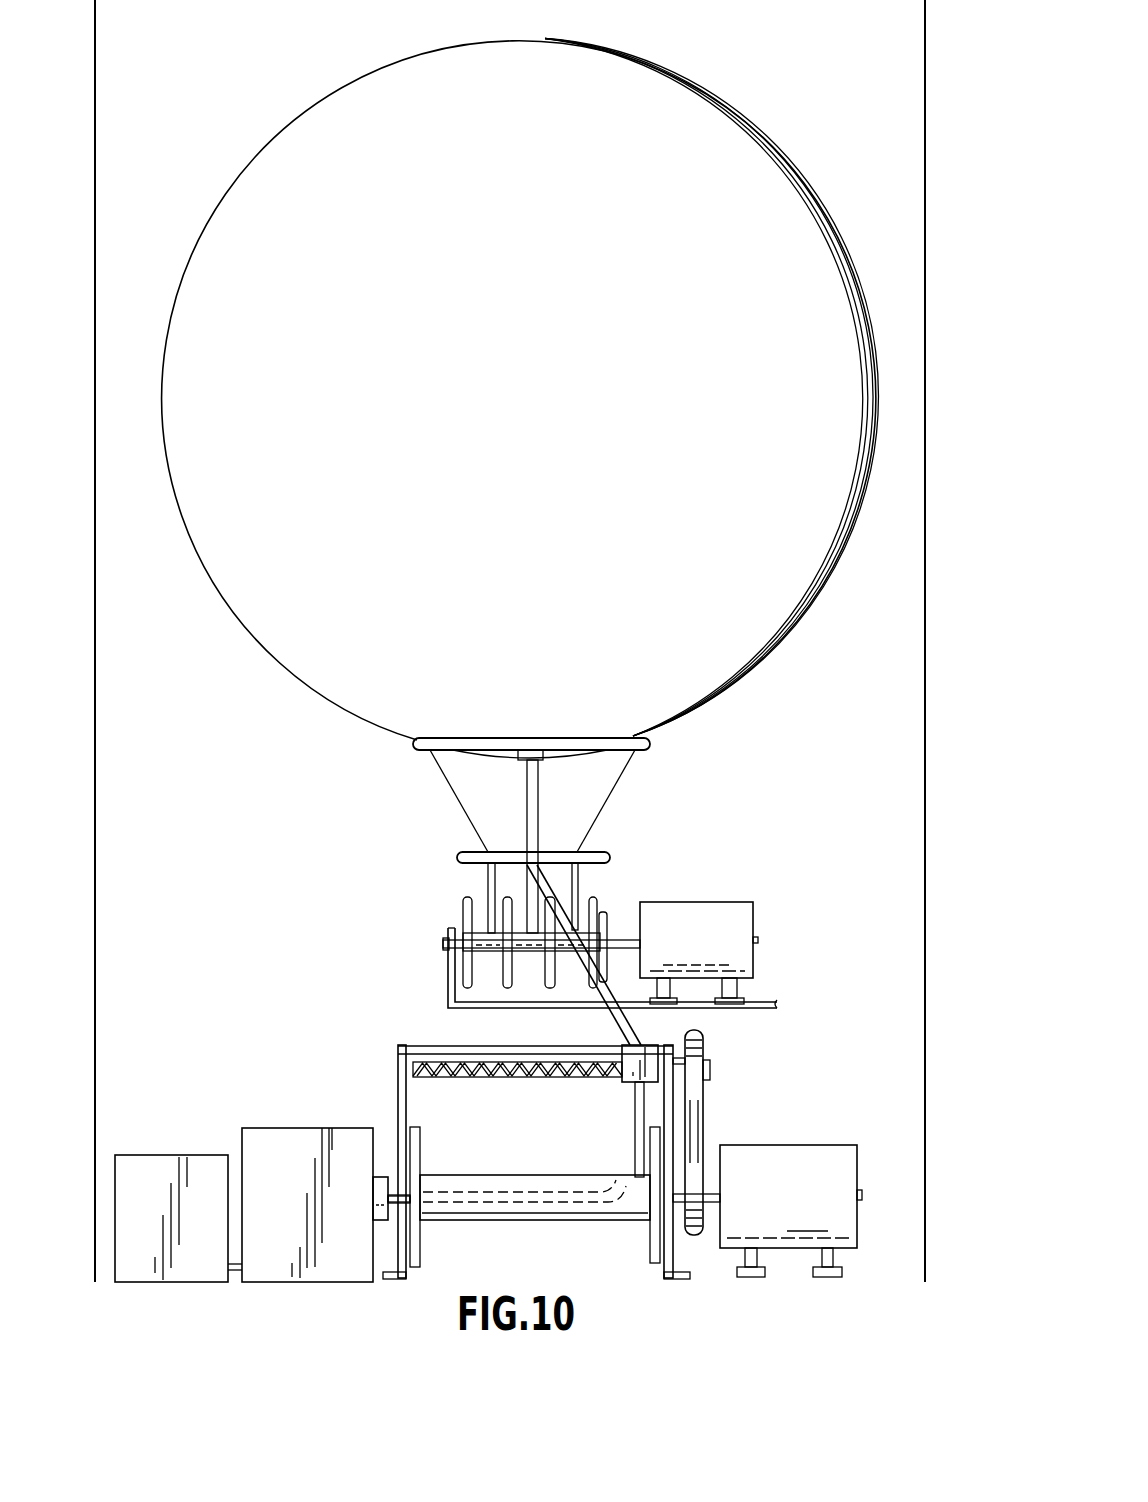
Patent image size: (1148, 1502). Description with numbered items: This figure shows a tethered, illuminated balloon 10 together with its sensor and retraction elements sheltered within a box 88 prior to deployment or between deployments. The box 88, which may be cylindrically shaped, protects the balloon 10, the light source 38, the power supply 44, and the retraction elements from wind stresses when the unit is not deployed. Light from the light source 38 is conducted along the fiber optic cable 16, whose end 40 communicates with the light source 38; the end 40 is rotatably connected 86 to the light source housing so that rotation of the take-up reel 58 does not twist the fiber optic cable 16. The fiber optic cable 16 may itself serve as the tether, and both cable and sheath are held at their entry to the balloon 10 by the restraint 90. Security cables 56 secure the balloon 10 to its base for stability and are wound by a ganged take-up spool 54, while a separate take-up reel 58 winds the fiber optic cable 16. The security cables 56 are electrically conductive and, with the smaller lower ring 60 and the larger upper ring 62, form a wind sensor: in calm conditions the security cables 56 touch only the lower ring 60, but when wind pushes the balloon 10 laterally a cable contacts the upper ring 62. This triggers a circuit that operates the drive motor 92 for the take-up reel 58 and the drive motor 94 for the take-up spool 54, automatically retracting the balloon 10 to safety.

The balloon 10 is at (821, 192).
The fiber optic cable 16 is at (527, 802).
The light source 38 is at (298, 1128).
The end of the fiber optic cable 40 is at (388, 1202).
The power supply 44 is at (162, 1155).
The take-up spool 54 is at (462, 917).
The security cables 56 is at (530, 902).
The take-up reel 58 is at (540, 1175).
The lower ring 60 is at (457, 856).
The upper ring 62 is at (413, 744).
The rotatable connection 86 is at (385, 1177).
The box 88 is at (926, 217).
The restraint 90 is at (547, 760).
The drive motor 92 is at (825, 1145).
The drive motor 94 is at (735, 902).